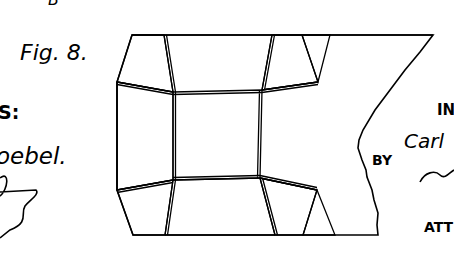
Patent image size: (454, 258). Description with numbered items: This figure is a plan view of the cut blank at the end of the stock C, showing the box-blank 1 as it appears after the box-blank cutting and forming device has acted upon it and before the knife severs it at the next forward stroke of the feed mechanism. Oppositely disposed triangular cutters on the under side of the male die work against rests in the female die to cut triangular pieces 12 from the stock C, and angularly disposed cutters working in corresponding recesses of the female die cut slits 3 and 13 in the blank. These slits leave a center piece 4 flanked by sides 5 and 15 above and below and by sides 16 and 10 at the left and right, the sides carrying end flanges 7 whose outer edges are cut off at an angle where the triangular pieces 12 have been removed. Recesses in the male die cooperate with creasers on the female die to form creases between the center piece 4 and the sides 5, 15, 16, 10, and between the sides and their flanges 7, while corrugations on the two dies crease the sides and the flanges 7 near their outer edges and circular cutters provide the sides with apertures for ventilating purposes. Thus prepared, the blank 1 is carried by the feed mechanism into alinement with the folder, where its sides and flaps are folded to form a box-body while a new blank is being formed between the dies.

The stock C is at (423, 43).
The box-blank 1 is at (117, 109).
The slits 3 is at (172, 73).
The center piece 4 is at (217, 135).
The side 5 is at (220, 206).
The end flanges 7 is at (217, 135).
The side 10 is at (289, 136).
The triangular pieces 12 is at (318, 135).
The slit 13 is at (261, 62).
The side 15 is at (255, 13).
The side 16 is at (142, 152).